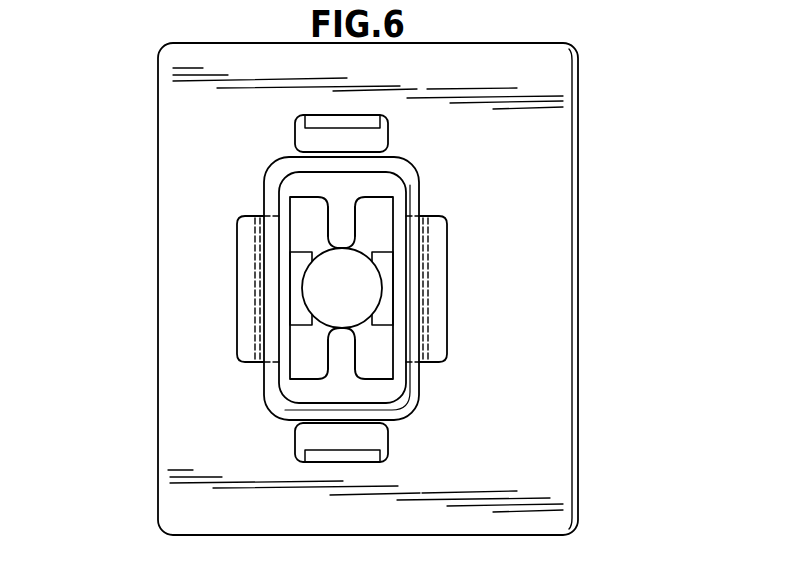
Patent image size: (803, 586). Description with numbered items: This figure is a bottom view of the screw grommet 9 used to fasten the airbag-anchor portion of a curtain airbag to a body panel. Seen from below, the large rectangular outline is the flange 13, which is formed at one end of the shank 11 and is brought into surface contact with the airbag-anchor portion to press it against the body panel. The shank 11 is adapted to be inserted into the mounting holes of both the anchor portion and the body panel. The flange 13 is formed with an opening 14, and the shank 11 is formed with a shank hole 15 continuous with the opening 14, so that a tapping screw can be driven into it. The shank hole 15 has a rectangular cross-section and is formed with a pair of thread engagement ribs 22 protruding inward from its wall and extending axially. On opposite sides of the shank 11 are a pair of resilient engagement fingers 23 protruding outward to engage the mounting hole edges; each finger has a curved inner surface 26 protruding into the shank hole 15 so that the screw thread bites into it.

The screw grommet 9 is at (597, 72).
The shank 11 is at (264, 190).
The flange 13 is at (160, 105).
The opening 14 is at (370, 262).
The shank hole 15 is at (373, 347).
The thread engagement ribs 22 is at (338, 247).
The resilient engagement fingers 23 is at (238, 291).
The inner surface 26 is at (322, 303).